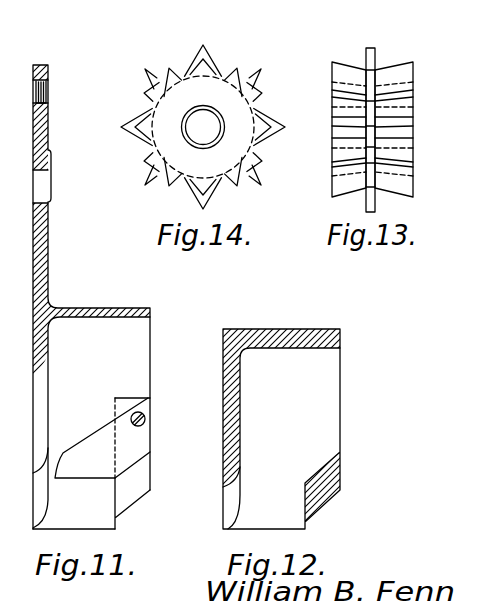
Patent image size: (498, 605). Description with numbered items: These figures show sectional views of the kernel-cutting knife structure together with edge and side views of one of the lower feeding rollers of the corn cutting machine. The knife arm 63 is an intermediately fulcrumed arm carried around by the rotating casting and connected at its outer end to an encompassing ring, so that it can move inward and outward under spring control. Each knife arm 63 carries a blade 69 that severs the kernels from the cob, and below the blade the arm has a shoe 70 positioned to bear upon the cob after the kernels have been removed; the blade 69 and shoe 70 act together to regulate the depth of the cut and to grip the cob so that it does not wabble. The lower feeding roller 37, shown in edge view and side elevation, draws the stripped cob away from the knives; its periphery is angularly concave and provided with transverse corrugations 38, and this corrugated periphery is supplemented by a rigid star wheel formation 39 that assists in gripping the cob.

In FIG. 11, the knife arm 63 is at (40, 274).
In FIG. 12, the knife arm 63 is at (328, 411).
In FIG. 11, the blade 69 is at (74, 462).
In FIG. 11, the shoe 70 is at (133, 473).
In FIG. 13, the lower feeding roller 37 is at (332, 90).
In FIG. 13, the transverse corrugations 38 is at (405, 108).
In FIG. 13, the star wheel formation 39 is at (374, 49).